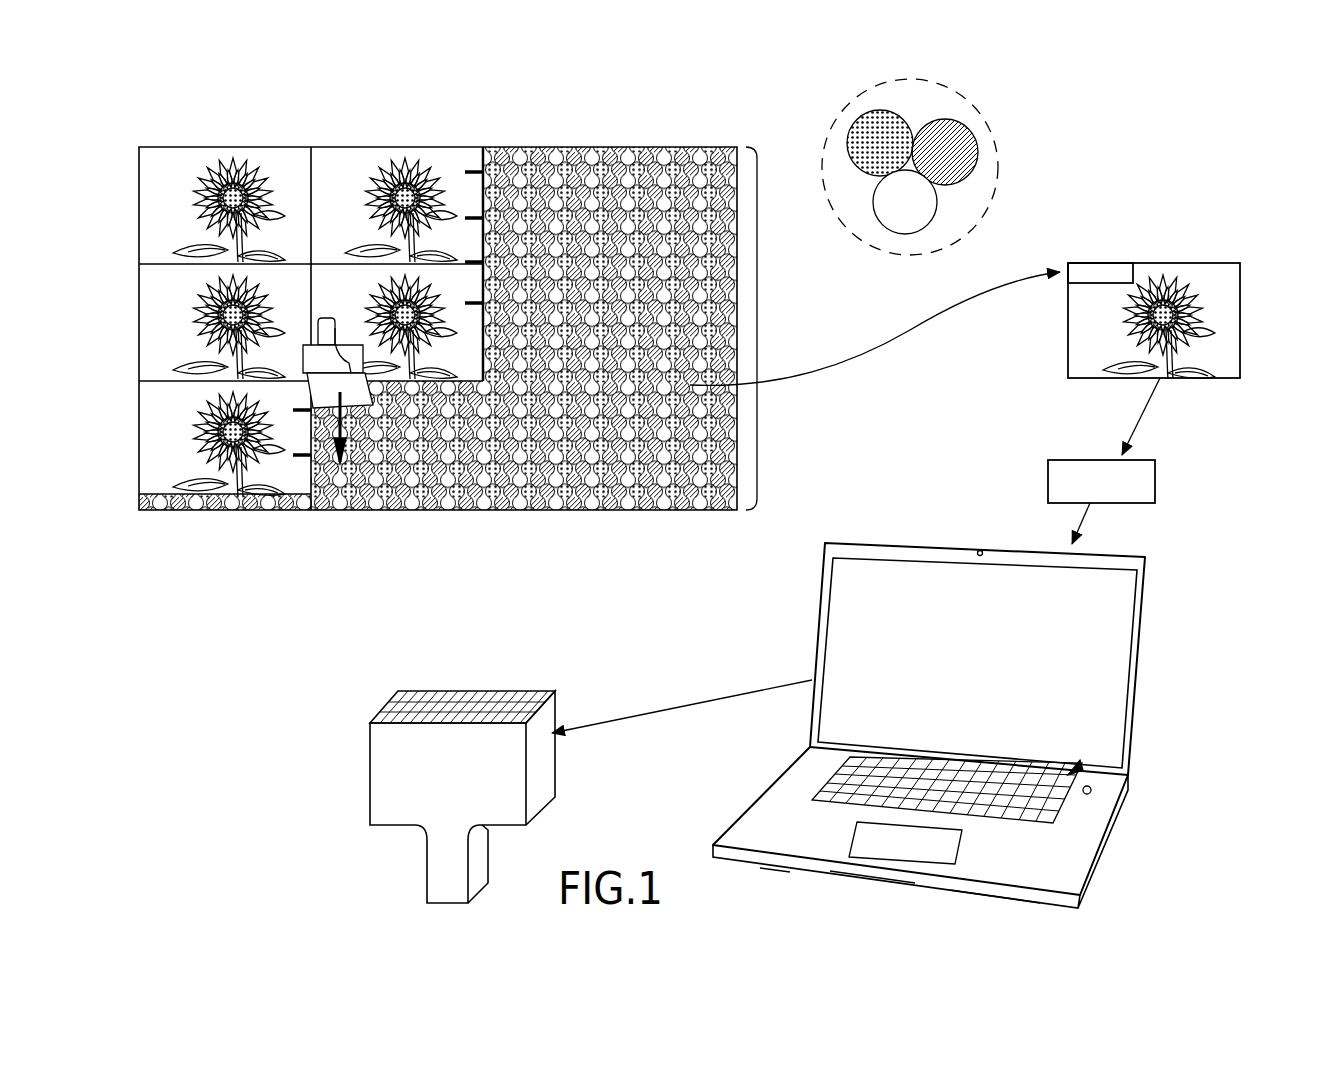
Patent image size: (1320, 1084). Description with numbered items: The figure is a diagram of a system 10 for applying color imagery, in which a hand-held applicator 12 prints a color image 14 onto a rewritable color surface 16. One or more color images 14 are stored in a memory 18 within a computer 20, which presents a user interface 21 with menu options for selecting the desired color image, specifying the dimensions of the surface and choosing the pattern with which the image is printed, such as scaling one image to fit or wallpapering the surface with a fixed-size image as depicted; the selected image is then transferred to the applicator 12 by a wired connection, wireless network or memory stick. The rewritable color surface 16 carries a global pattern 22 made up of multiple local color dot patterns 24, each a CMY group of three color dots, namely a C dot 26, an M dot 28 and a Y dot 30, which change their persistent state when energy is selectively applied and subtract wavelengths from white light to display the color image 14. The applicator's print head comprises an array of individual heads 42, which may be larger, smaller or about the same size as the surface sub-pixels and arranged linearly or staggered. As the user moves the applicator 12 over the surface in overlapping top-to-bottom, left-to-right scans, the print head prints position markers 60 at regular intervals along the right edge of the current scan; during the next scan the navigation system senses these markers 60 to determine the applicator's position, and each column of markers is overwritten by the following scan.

The system 10 is at (314, 634).
The hand-held applicator 12 is at (370, 770).
The color image 14 is at (262, 147).
The rewritable color surface 16 is at (625, 147).
The memory 18 is at (1157, 476).
The computer 20 is at (1138, 606).
The user interface 21 is at (1078, 692).
The global pattern 22 is at (758, 330).
The local color dot pattern 24 is at (820, 145).
The C color dot 26 is at (850, 131).
The M color dot 28 is at (970, 144).
The Y color dot 30 is at (884, 228).
The individual heads 42 is at (444, 695).
The position markers 60 is at (477, 160).